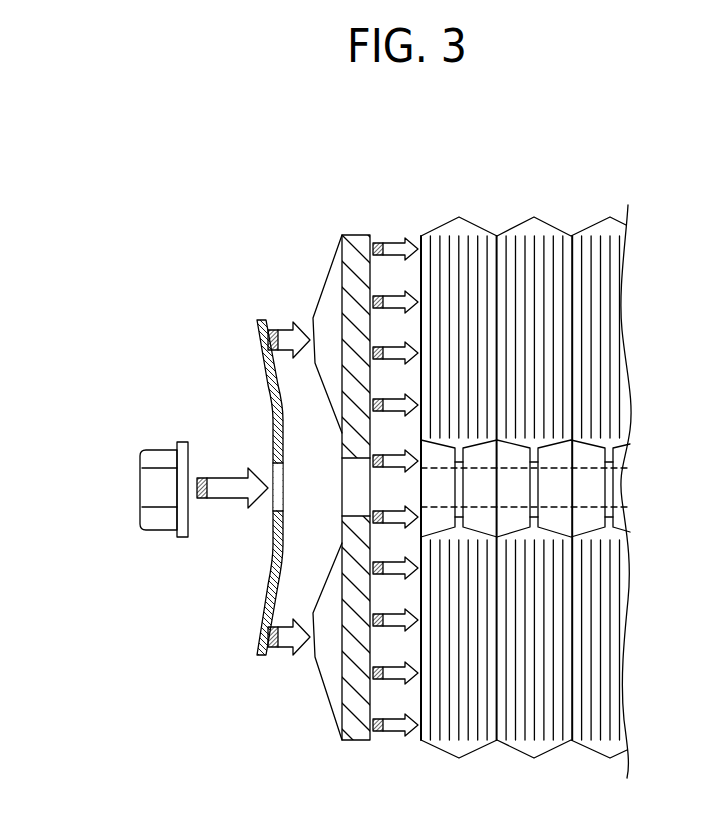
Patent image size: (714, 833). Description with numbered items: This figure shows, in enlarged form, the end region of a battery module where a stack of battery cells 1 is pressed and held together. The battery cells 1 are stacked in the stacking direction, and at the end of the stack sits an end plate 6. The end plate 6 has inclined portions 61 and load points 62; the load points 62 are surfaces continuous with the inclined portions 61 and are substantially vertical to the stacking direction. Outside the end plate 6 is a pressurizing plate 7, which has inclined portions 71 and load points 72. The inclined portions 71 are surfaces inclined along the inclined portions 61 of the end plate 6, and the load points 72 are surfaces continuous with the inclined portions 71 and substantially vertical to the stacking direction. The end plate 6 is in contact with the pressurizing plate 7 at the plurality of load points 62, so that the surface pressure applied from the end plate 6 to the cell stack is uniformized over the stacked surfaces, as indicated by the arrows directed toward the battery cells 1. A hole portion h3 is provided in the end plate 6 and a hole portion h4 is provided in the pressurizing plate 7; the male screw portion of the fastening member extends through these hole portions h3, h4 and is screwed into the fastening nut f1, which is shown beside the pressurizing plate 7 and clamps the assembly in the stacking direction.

The battery cell 1 is at (507, 152).
The end plate 6 is at (304, 435).
The inclined portion 61 is at (330, 401).
The load point 62 is at (313, 317).
The pressurizing plate 7 is at (232, 452).
The inclined portion 71 is at (262, 400).
The load point 72 is at (257, 345).
The fastening nut f1 is at (140, 460).
The hole portion h3 is at (343, 505).
The hole portion h4 is at (273, 508).